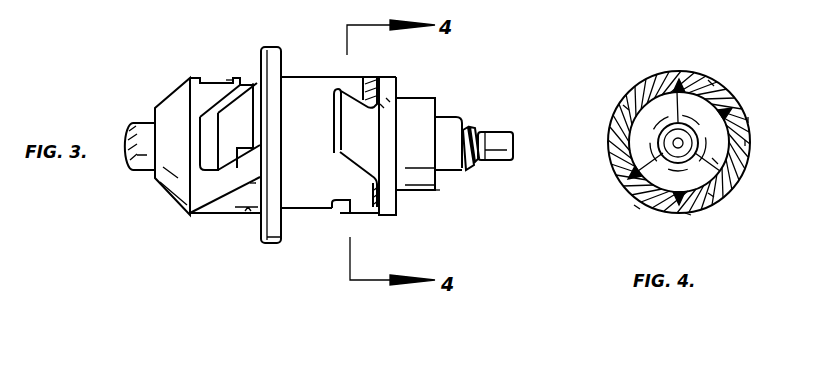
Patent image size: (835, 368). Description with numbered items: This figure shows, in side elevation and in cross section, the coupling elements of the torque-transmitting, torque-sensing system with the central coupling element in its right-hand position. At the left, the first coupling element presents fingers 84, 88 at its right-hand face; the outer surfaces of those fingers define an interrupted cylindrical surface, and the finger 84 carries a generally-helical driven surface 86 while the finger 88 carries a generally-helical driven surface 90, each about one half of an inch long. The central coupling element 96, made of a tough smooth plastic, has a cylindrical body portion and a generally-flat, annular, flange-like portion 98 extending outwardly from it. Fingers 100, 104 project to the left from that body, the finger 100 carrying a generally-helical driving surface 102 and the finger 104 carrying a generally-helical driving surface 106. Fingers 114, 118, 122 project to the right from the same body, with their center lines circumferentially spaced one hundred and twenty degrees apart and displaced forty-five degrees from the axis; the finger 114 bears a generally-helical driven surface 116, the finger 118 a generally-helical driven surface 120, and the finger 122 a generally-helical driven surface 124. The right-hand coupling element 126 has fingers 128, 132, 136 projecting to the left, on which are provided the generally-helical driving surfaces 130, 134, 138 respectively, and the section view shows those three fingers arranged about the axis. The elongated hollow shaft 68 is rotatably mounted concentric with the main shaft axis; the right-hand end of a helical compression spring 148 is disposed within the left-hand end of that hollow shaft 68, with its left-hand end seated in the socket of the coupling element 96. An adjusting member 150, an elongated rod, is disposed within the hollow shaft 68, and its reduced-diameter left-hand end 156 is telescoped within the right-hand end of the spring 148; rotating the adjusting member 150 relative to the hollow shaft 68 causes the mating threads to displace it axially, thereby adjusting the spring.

In FIG. 3, the elongated hollow shaft 68 is at (463, 120).
In FIG. 4, the elongated hollow shaft 68 is at (743, 190).
In FIG. 3, the finger 84 is at (222, 78).
In FIG. 3, the generally-helical driven surface 86 is at (207, 115).
In FIG. 3, the finger 88 is at (218, 190).
In FIG. 3, the generally-helical driven surface 90 is at (227, 213).
In FIG. 3, the coupling element 96 is at (316, 80).
In FIG. 3, the flange-like portion 98 is at (282, 50).
In FIG. 3, the finger 100 is at (253, 83).
In FIG. 3, the generally-helical driving surface 102 is at (228, 80).
In FIG. 3, the finger 104 is at (248, 213).
In FIG. 3, the generally-helical driving surface 106 is at (253, 183).
In FIG. 3, the finger 114 is at (357, 85).
In FIG. 4, the finger 114 is at (712, 83).
In FIG. 3, the generally-helical driven surface 116 is at (335, 95).
In FIG. 4, the generally-helical driven surface 116 is at (730, 106).
In FIG. 3, the finger 118 is at (350, 180).
In FIG. 4, the finger 118 is at (711, 195).
In FIG. 3, the generally-helical driven surface 120 is at (355, 215).
In FIG. 4, the generally-helical driven surface 120 is at (688, 215).
In FIG. 4, the finger 122 is at (608, 173).
In FIG. 4, the generally-helical driven surface 124 is at (611, 127).
In FIG. 3, the coupling element 126 is at (443, 194).
In FIG. 4, the coupling element 126 is at (721, 166).
In FIG. 3, the finger 128 is at (363, 137).
In FIG. 4, the finger 128 is at (747, 143).
In FIG. 3, the generally-helical driving surface 130 is at (383, 80).
In FIG. 4, the generally-helical driving surface 130 is at (750, 120).
In FIG. 3, the finger 132 is at (343, 218).
In FIG. 4, the finger 132 is at (637, 207).
In FIG. 3, the generally-helical driving surface 134 is at (395, 212).
In FIG. 4, the generally-helical driving surface 134 is at (654, 215).
In FIG. 3, the finger 136 is at (388, 100).
In FIG. 4, the finger 136 is at (645, 85).
In FIG. 3, the generally-helical driving surface 138 is at (380, 107).
In FIG. 4, the generally-helical driving surface 138 is at (626, 108).
In FIG. 3, the helical compression spring 148 is at (470, 160).
In FIG. 4, the helical compression spring 148 is at (677, 125).
In FIG. 3, the adjusting member 150 is at (513, 143).
In FIG. 4, the reduced-diameter left-hand end 156 is at (627, 185).